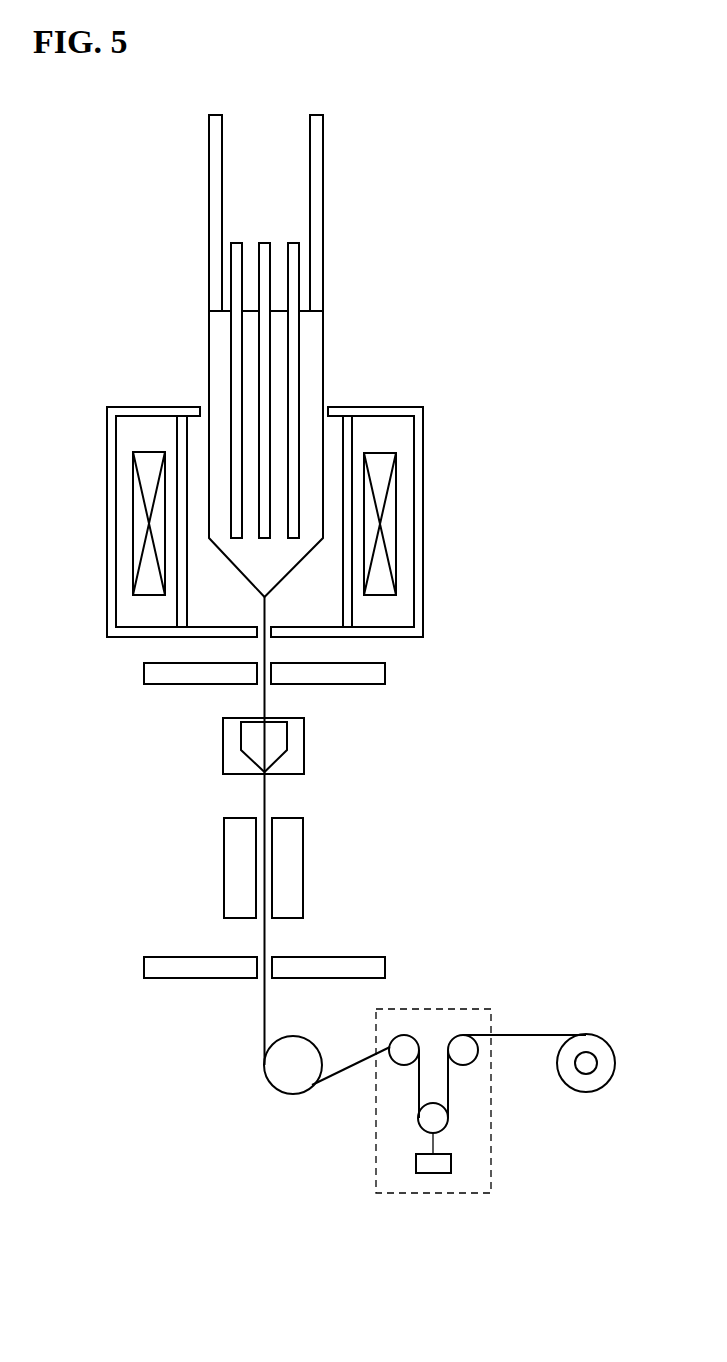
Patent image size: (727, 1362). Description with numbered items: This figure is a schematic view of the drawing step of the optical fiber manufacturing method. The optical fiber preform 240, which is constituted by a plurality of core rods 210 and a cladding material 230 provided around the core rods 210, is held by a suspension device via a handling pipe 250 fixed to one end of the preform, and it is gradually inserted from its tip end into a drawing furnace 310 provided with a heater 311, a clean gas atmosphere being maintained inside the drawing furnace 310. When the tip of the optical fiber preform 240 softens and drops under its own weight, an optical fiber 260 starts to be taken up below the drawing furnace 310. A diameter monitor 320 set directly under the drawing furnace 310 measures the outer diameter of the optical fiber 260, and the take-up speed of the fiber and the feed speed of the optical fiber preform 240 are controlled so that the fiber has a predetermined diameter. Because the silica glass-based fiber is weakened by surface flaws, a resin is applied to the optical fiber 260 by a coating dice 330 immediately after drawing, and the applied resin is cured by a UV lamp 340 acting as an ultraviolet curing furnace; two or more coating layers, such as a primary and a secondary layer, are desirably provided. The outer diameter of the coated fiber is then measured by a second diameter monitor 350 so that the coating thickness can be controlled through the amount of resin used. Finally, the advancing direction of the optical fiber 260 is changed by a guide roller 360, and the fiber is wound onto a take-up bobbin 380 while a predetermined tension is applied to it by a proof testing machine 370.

The core rods 210 is at (235, 321).
The cladding material 230 is at (218, 355).
The optical fiber preform 240 is at (325, 340).
The handling pipe 250 is at (324, 176).
The optical fiber 260 is at (266, 795).
The drawing furnace 310 is at (423, 440).
The heater 311 is at (396, 512).
The diameter monitor 320 is at (385, 672).
The coating dice 330 is at (304, 742).
The UV lamp 340 is at (303, 867).
The diameter monitor 350 is at (385, 966).
The guide roller 360 is at (300, 1047).
The proof testing machine 370 is at (484, 1006).
The take-up bobbin 380 is at (595, 1046).